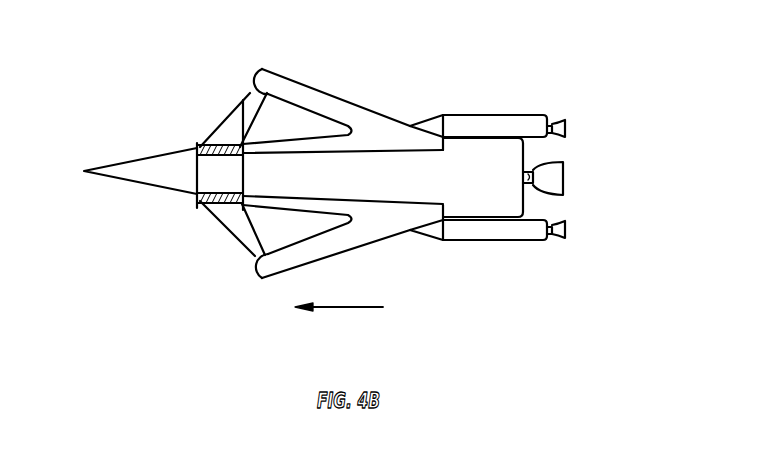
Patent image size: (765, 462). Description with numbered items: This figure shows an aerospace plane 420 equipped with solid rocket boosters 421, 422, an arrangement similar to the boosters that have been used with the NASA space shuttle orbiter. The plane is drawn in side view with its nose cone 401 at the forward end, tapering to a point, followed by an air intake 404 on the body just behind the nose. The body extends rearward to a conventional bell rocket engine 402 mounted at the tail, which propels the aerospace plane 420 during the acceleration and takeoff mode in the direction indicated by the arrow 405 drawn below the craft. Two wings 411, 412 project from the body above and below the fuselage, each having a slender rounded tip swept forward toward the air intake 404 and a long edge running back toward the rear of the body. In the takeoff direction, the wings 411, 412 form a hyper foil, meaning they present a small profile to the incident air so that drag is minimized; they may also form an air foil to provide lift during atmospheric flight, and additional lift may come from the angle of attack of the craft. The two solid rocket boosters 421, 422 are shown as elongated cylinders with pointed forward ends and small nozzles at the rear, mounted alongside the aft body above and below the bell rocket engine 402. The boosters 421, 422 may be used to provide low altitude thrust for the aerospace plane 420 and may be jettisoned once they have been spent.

The nose cone 401 is at (120, 162).
The bell rocket engine 402 is at (565, 178).
The air intake 404 is at (197, 145).
The arrow 405 is at (363, 307).
The wing 411 is at (293, 83).
The wing 412 is at (343, 248).
The aerospace plane 420 is at (457, 45).
The solid rocket booster 421 is at (533, 115).
The solid rocket booster 422 is at (528, 240).